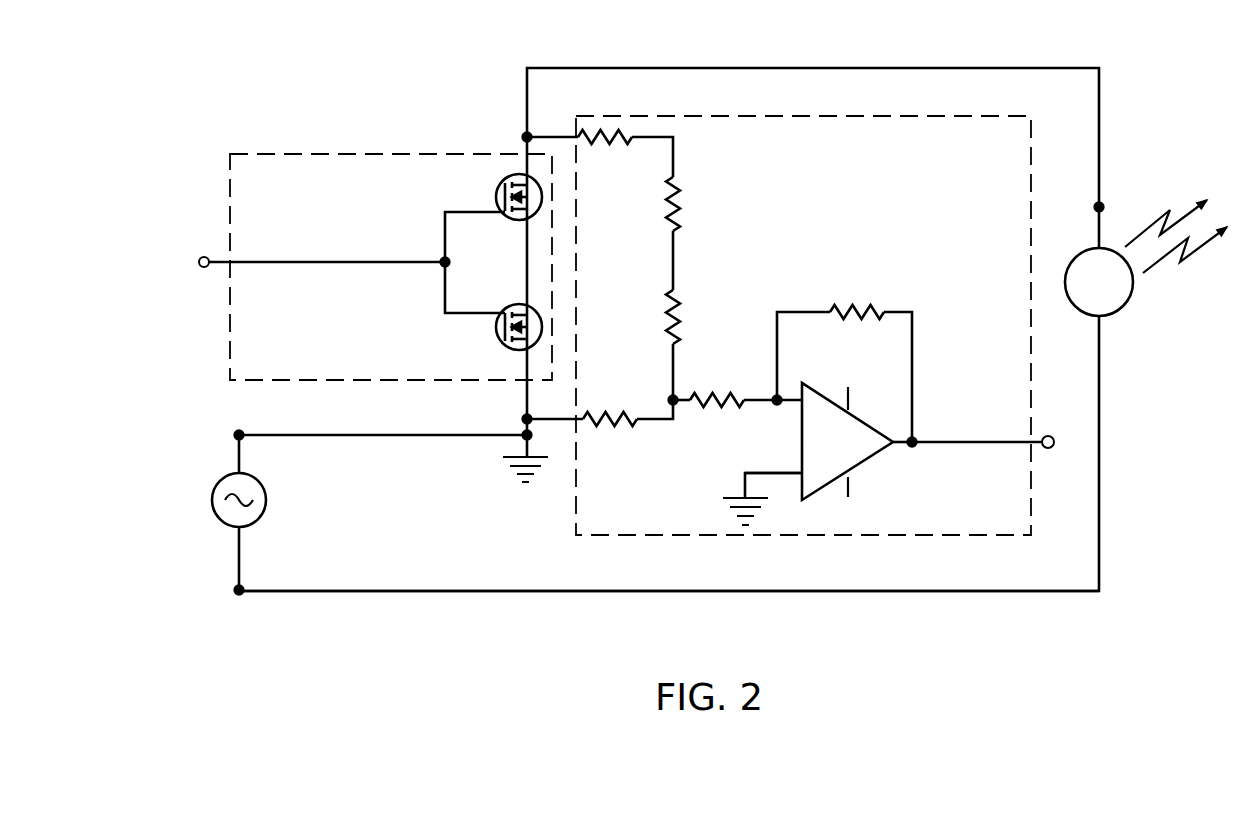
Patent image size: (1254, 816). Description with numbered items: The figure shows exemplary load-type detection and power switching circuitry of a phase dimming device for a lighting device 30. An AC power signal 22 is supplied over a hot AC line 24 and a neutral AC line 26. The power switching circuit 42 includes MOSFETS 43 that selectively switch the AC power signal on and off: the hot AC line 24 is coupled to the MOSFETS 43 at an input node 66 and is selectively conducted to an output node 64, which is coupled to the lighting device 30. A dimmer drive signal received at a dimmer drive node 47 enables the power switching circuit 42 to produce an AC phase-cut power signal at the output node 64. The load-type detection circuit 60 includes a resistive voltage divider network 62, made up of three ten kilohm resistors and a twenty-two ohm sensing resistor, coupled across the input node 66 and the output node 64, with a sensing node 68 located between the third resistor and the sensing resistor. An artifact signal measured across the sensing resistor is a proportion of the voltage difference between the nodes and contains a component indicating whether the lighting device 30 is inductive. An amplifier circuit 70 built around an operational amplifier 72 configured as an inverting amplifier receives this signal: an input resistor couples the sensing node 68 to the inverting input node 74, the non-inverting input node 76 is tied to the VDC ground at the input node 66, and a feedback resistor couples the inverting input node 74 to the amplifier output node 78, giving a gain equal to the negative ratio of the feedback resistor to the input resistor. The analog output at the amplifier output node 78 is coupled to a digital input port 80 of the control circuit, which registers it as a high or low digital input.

The AC power signal 22 is at (218, 520).
The hot AC line 24 is at (250, 425).
The neutral AC line 26 is at (239, 597).
The lighting device 30 is at (1128, 305).
The power switching circuit 42 is at (355, 152).
The MOSFETS 43 is at (512, 222).
The dimmer drive node 47 is at (204, 270).
The load-type detection circuit 60 is at (1031, 150).
The resistive voltage divider network 62 is at (715, 140).
The output node 64 is at (525, 133).
The input node 66 is at (522, 418).
The sensing node 68 is at (670, 398).
The amplifier circuit 70 is at (950, 500).
The operational amplifier 72 is at (868, 462).
The inverting input node 74 is at (775, 398).
The non-inverting input node 76 is at (770, 472).
The amplifier output node 78 is at (915, 440).
The digital input port 80 is at (1055, 442).